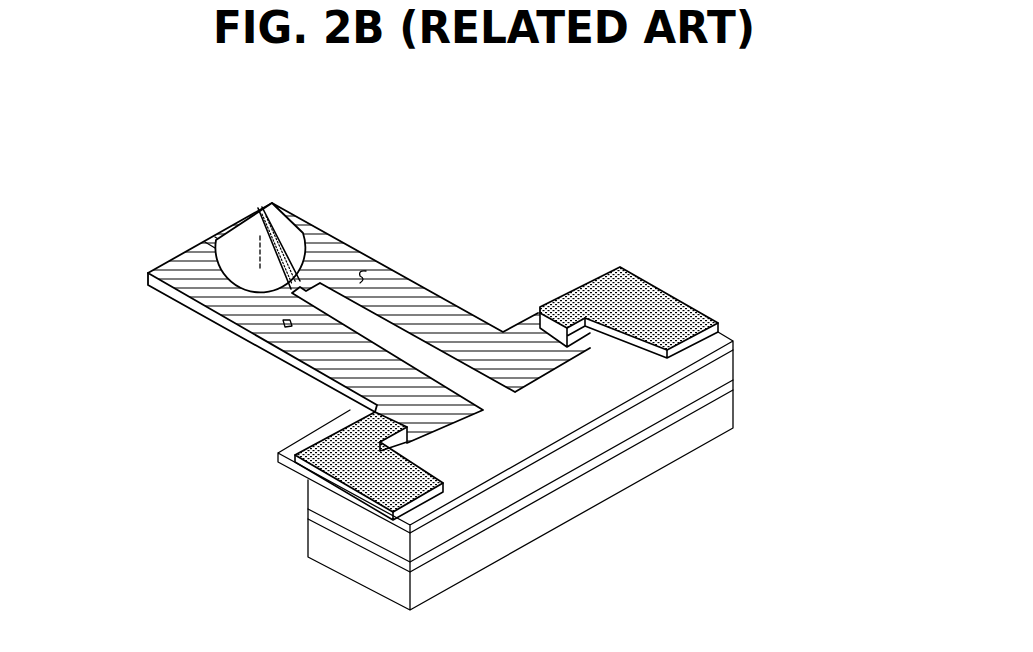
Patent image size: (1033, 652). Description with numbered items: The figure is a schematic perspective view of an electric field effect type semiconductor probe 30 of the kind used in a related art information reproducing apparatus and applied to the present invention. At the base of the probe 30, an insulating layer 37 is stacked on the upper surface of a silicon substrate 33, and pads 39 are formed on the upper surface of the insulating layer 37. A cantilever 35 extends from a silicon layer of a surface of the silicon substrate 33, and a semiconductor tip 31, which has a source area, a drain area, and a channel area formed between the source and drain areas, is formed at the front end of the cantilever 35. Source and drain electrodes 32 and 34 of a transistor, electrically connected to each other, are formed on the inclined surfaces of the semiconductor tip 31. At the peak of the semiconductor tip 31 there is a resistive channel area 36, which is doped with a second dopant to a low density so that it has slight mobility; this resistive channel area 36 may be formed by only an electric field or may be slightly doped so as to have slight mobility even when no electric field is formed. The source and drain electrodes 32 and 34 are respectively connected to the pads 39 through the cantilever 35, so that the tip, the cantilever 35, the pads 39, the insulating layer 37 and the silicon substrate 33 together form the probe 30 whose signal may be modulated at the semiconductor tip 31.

The semiconductor probe 30 is at (587, 176).
The semiconductor tip 31 is at (302, 233).
The source electrode 32 is at (347, 257).
The silicon substrate 33 is at (745, 350).
The drain electrode 34 is at (190, 268).
The cantilever 35 is at (205, 313).
The resistive channel area 36 is at (260, 213).
The insulating layer 37 is at (720, 343).
The pads 39 is at (658, 298).